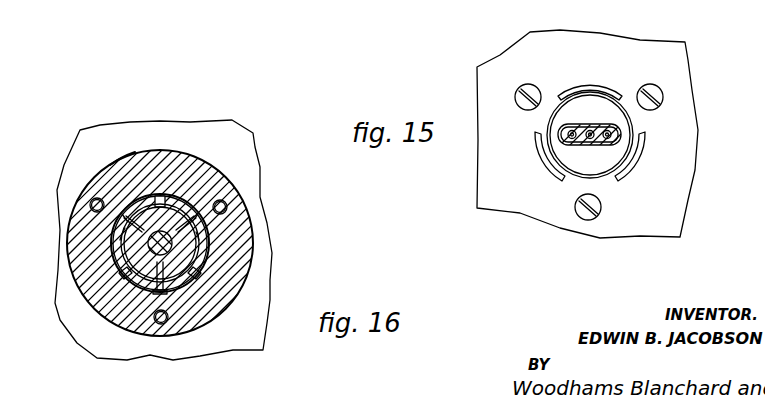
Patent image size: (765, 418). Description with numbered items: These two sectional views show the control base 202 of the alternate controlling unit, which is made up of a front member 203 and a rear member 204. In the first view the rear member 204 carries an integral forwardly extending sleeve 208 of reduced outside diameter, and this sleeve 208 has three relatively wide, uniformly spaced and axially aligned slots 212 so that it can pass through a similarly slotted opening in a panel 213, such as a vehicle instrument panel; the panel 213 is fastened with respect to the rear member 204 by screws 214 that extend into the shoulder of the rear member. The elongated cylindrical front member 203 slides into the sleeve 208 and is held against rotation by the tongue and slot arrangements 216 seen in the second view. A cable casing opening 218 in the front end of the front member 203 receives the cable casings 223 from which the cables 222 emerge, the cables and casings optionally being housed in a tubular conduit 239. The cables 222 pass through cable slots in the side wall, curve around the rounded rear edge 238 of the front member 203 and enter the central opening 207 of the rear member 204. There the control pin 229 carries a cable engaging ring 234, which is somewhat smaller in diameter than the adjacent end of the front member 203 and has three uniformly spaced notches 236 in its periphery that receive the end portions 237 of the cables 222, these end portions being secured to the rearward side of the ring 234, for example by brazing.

In FIG. 16, the control base 202 is at (161, 150).
In FIG. 16, the rear member 204 is at (110, 165).
In FIG. 16, the central opening 207 is at (188, 224).
In FIG. 16, the notches 236 is at (180, 198).
In FIG. 16, the cable engaging ring 234 is at (196, 239).
In FIG. 16, the tongue and slot arrangements 216 is at (196, 243).
In FIG. 16, the end portions 237 is at (124, 218).
In FIG. 16, the control pin 229 is at (152, 251).
In FIG. 16, the rear edge 238 is at (180, 284).
In FIG. 16, the screws 214 is at (158, 324).
In FIG. 15, the screws 214 is at (661, 94).
In FIG. 16, the panel 213 is at (237, 342).
In FIG. 15, the panel 213 is at (492, 190).
In FIG. 15, the sleeve 208 is at (592, 84).
In FIG. 15, the front member 203 is at (566, 110).
In FIG. 15, the slots 212 is at (616, 105).
In FIG. 15, the tubular conduit 239 is at (562, 125).
In FIG. 15, the cable casing opening 218 is at (606, 126).
In FIG. 15, the cable casings 223 is at (560, 152).
In FIG. 15, the cables 222 is at (606, 150).